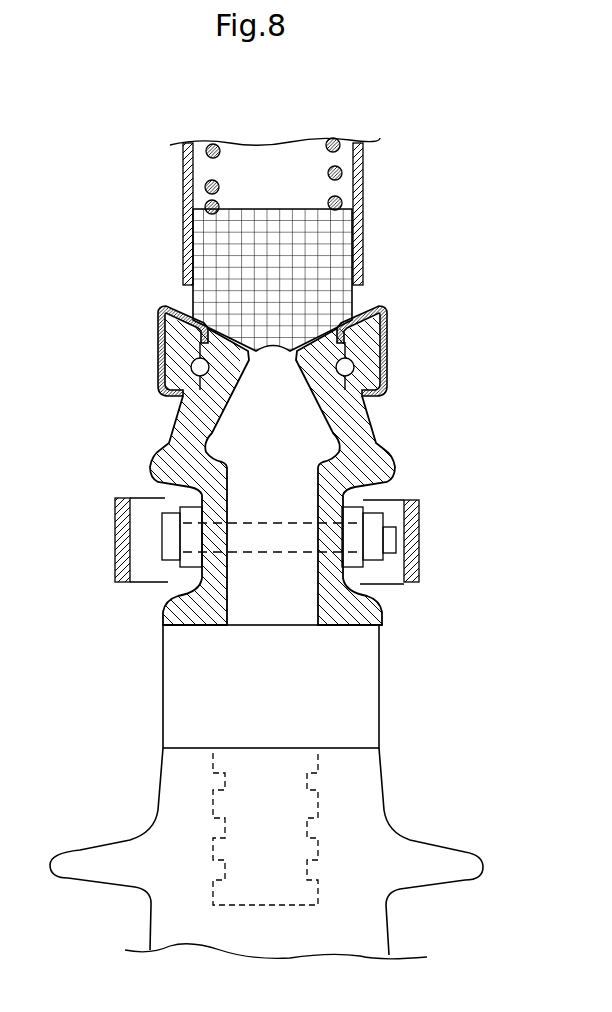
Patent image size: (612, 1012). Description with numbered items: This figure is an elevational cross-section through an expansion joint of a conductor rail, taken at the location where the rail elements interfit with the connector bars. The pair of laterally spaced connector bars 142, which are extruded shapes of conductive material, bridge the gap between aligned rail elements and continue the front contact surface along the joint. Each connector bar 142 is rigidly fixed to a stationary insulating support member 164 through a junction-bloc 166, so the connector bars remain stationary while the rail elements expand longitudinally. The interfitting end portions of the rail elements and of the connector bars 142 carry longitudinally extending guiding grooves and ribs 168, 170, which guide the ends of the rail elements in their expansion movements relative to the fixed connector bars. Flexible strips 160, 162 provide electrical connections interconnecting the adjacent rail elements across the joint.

The connector bar 142 is at (368, 465).
The flexible strip 160 is at (404, 558).
The flexible strip 162 is at (117, 532).
The insulating support member 164 is at (362, 808).
The junction-bloc 166 is at (183, 677).
The guiding groove and rib 168 is at (345, 364).
The guiding groove and rib 170 is at (197, 364).